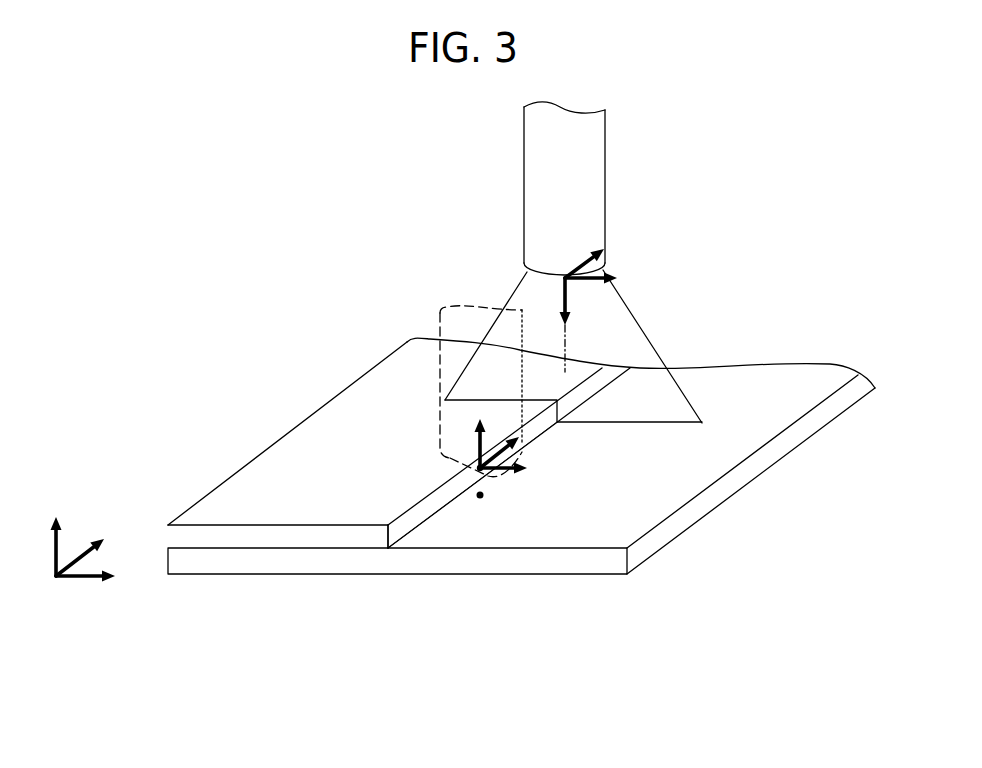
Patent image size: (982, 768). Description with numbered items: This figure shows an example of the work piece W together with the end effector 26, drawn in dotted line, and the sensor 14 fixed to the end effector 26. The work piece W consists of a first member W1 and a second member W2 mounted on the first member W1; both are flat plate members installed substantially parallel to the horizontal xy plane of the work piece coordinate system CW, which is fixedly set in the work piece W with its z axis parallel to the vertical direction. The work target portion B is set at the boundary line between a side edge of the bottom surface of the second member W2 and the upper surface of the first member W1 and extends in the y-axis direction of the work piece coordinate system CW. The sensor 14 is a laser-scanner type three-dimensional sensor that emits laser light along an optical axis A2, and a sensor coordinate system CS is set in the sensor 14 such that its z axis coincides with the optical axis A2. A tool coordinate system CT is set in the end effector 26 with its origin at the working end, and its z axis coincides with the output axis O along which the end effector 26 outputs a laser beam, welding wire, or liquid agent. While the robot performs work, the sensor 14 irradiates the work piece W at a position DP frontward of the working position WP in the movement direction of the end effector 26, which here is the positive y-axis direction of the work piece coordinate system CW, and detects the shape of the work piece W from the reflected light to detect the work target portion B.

The sensor 14 is at (605, 185).
The sensor coordinate system CS is at (572, 270).
The optical axis A2 is at (568, 341).
The irradiation position DP is at (610, 425).
The end effector 26 is at (430, 360).
The work piece W is at (521, 534).
The first member W1 is at (343, 558).
The second member W2 is at (272, 537).
The work target portion B is at (443, 515).
The tool coordinate system CT is at (507, 475).
The output axis O is at (472, 470).
The working position WP is at (484, 497).
The work piece coordinate system CW is at (80, 578).